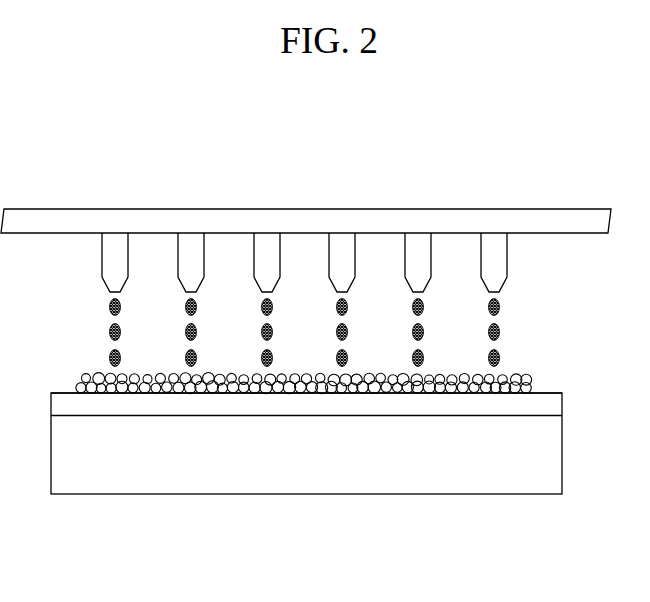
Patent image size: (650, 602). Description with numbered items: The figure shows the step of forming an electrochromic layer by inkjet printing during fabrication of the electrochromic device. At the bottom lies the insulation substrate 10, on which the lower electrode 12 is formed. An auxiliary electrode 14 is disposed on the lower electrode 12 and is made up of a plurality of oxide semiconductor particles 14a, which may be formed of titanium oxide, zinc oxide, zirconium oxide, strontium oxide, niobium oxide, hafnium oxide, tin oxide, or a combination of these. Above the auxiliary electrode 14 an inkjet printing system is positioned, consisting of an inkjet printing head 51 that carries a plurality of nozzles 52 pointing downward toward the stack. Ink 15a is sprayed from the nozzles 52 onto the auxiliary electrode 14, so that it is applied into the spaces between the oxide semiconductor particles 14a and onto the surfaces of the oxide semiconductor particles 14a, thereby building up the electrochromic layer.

The insulation substrate 10 is at (482, 472).
The lower electrode 12 is at (352, 407).
The auxiliary electrode 14 is at (567, 375).
The oxide semiconductor particles 14a is at (221, 393).
The ink 15a is at (110, 331).
The inkjet printing head 51 is at (543, 222).
The nozzles 52 is at (108, 265).